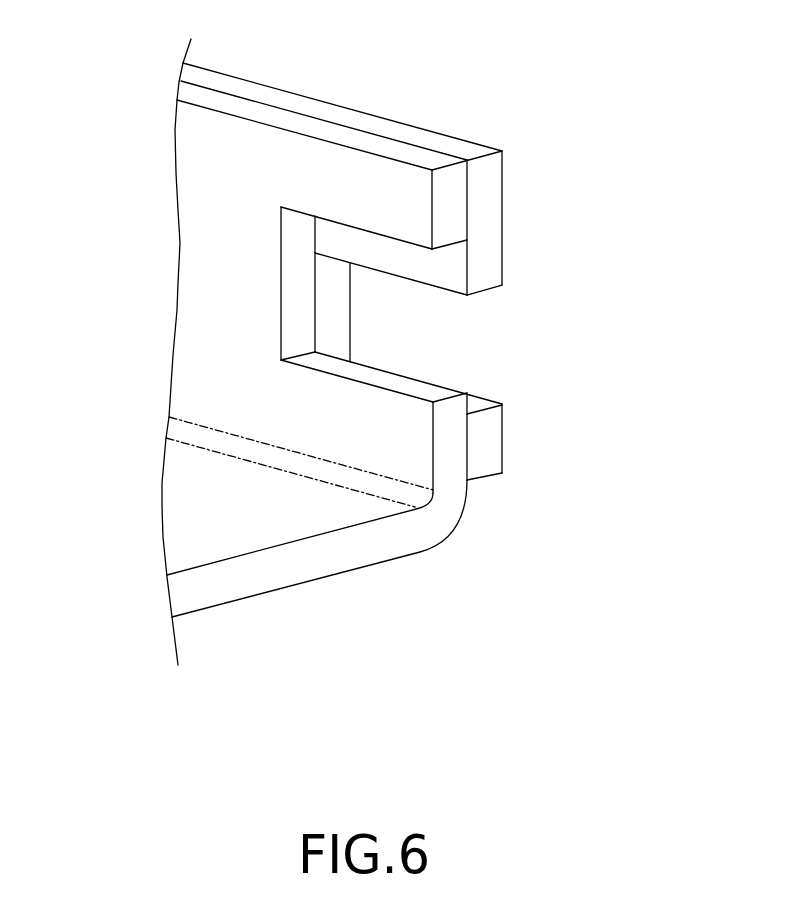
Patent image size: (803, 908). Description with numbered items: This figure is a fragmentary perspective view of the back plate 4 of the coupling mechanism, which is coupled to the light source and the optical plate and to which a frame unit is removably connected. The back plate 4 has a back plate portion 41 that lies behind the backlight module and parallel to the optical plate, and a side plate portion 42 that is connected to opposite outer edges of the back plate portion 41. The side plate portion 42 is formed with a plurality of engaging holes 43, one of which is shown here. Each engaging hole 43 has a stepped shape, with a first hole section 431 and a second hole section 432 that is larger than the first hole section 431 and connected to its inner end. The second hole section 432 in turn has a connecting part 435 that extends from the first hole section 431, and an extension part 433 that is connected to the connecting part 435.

The back plate 4 is at (352, 620).
The back plate portion 41 is at (258, 588).
The side plate portion 42 is at (197, 212).
The engaging hole 43 is at (547, 275).
The first hole section 431 is at (487, 292).
The second hole section 432 is at (275, 321).
The extension part 433 is at (450, 262).
The connecting part 435 is at (420, 335).